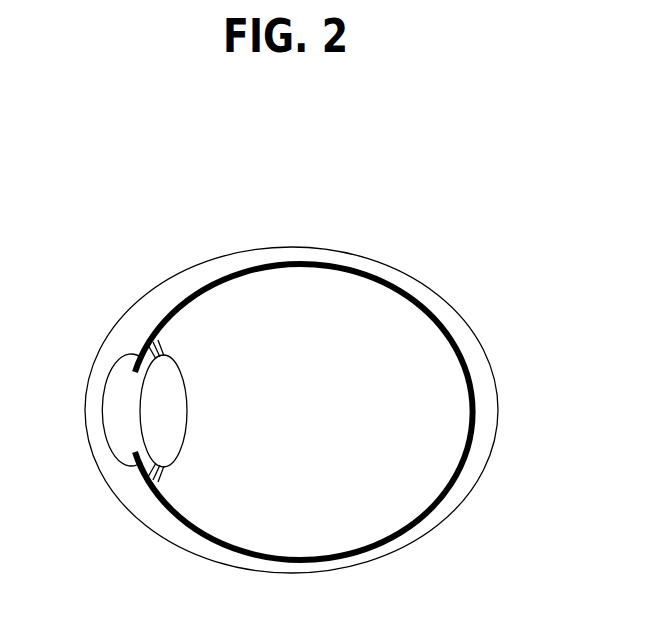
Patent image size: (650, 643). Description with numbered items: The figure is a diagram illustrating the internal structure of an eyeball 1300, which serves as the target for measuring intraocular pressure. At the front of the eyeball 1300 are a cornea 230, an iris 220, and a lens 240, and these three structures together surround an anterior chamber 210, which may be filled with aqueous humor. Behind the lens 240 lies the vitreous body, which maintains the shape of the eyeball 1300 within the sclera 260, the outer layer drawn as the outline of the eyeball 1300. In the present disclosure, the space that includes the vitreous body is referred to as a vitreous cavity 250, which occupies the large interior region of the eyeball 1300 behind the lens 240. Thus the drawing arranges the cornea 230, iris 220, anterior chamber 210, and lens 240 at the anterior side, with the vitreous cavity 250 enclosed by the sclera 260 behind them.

The eyeball 1300 is at (517, 155).
The anterior chamber 210 is at (127, 408).
The iris 220 is at (133, 456).
The cornea 230 is at (122, 358).
The lens 240 is at (168, 377).
The vitreous cavity 250 is at (420, 382).
The sclera 260 is at (420, 297).